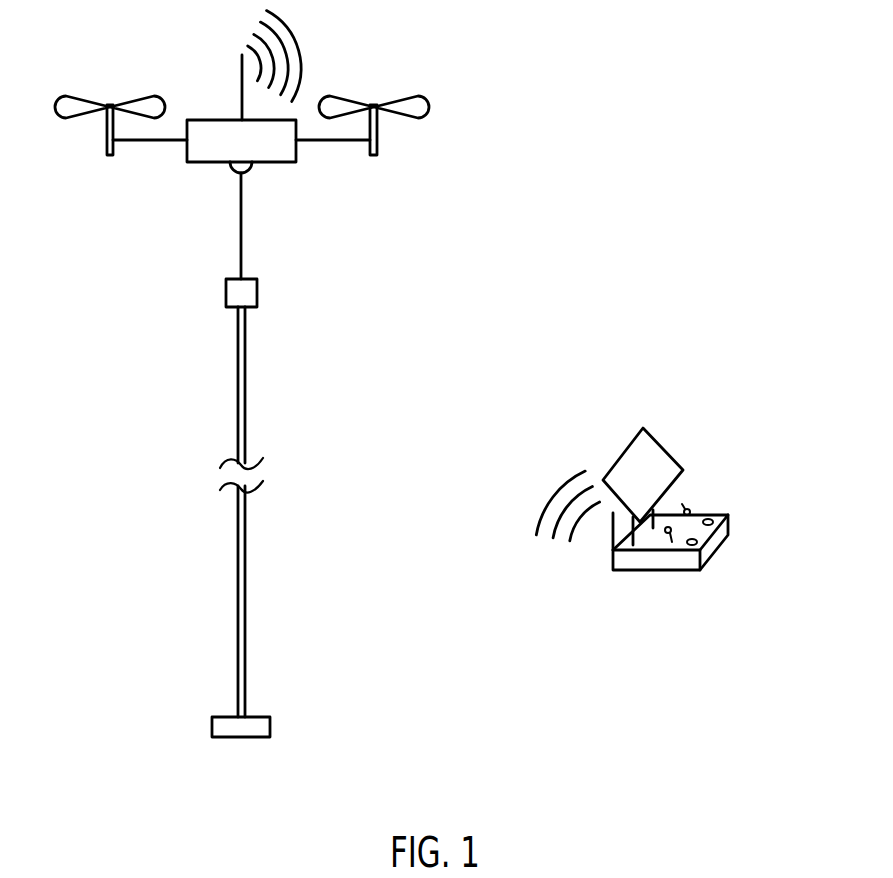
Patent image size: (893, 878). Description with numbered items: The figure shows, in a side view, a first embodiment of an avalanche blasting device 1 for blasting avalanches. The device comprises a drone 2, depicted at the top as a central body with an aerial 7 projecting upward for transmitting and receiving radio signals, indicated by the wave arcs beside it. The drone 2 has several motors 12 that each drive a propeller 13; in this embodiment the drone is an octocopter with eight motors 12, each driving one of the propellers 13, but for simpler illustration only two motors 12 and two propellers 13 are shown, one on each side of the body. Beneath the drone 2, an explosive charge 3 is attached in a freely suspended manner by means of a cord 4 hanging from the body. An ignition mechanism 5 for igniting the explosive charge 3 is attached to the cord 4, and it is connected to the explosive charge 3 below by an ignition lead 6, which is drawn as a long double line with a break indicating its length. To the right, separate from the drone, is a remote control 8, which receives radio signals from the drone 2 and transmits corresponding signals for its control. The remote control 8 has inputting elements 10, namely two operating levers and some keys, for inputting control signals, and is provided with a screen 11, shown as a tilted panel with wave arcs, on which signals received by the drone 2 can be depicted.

The avalanche blasting device 1 is at (513, 102).
The drone 2 is at (183, 75).
The explosive charge 3 is at (272, 721).
The cord 4 is at (243, 216).
The ignition mechanism 5 is at (258, 291).
The ignition lead 6 is at (238, 387).
The aerial 7 is at (240, 70).
The remote control 8 is at (712, 433).
The inputting elements 10 is at (690, 506).
The screen 11 is at (657, 448).
The motors 12 is at (106, 146).
The propellers 13 is at (408, 98).